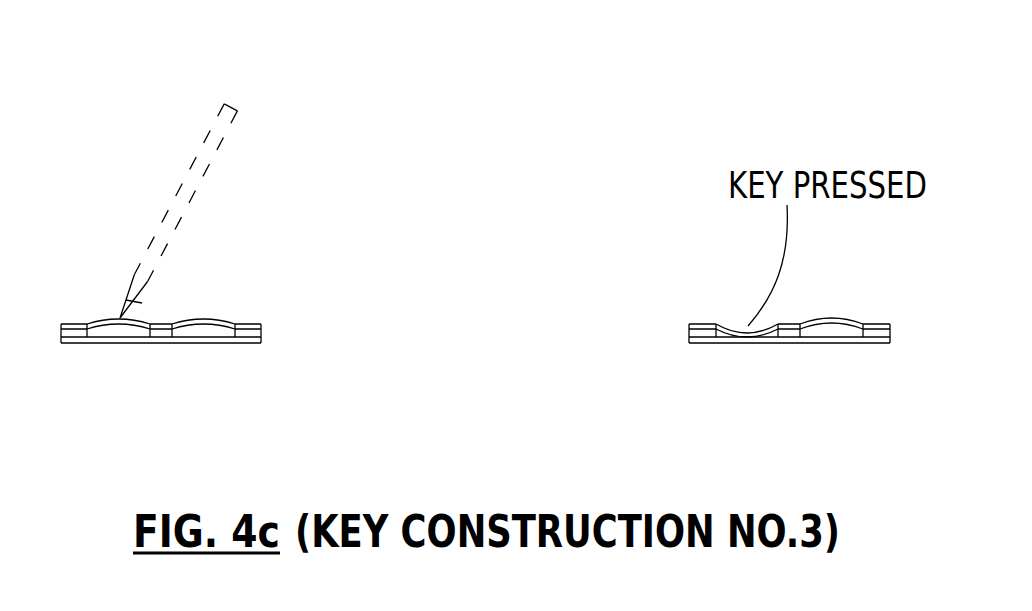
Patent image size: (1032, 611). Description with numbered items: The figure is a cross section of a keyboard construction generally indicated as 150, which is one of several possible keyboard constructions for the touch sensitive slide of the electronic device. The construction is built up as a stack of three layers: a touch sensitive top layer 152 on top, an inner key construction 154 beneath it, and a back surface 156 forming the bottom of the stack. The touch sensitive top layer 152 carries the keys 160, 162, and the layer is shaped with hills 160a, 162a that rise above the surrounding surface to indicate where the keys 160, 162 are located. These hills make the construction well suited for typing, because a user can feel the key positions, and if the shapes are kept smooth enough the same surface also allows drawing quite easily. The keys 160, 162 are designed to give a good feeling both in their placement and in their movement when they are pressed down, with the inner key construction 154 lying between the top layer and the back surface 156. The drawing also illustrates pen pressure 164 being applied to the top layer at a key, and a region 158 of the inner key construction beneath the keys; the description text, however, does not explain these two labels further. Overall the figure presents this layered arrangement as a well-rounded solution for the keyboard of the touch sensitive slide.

The keyboard construction 150 is at (104, 205).
The touch sensitive top layer 152 is at (248, 323).
The inner key construction 154 is at (688, 333).
The back surface 156 is at (718, 343).
The key contact region 158 is at (198, 335).
The key 160 is at (111, 316).
The hill 160a is at (140, 322).
The key 162 is at (199, 316).
The hill 162a is at (231, 322).
The pen pressure 164 is at (306, 183).